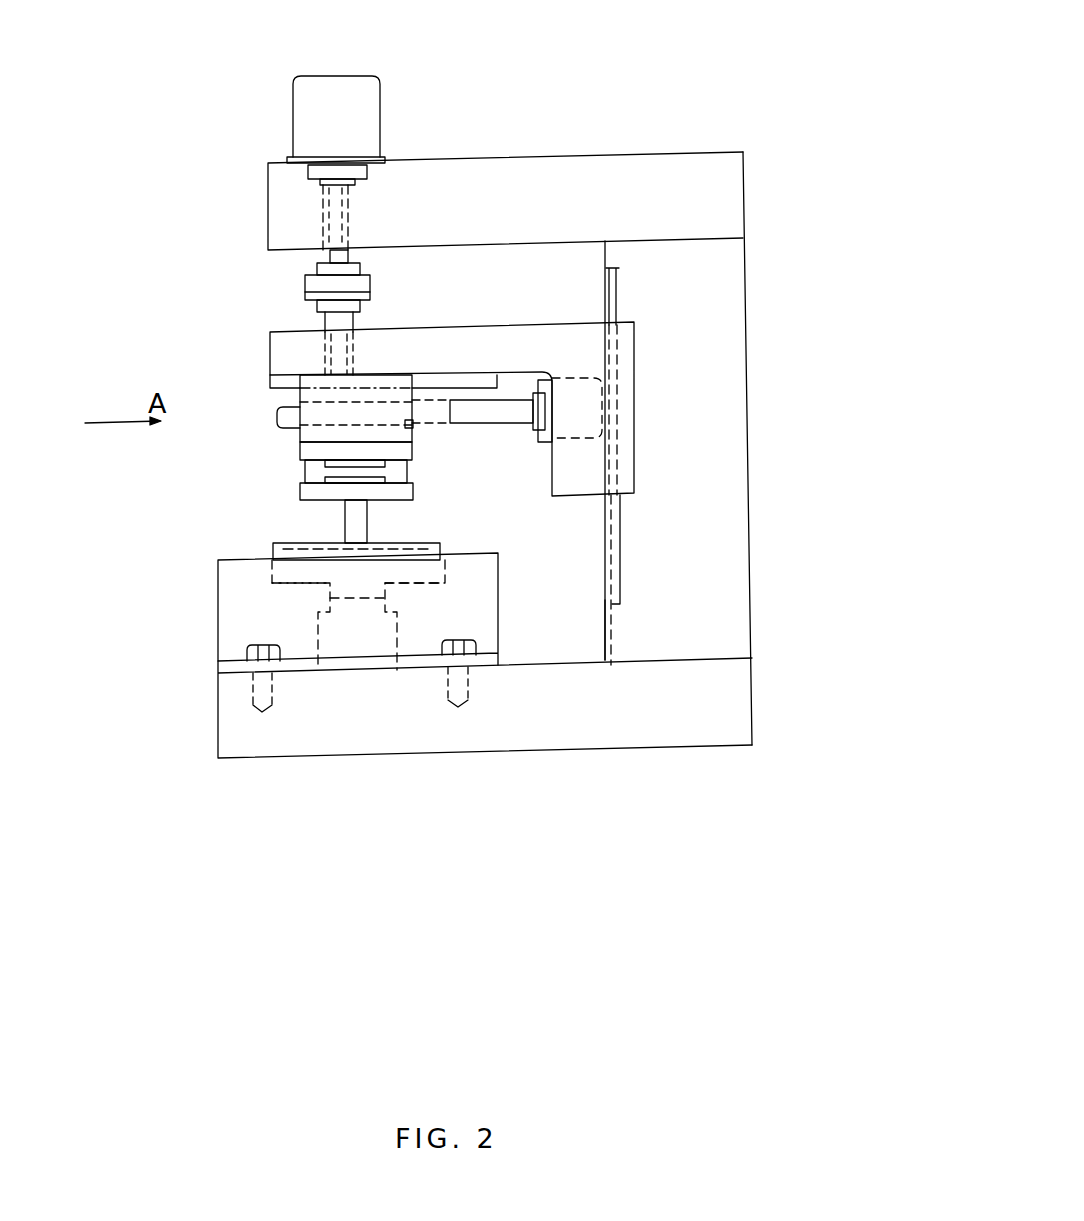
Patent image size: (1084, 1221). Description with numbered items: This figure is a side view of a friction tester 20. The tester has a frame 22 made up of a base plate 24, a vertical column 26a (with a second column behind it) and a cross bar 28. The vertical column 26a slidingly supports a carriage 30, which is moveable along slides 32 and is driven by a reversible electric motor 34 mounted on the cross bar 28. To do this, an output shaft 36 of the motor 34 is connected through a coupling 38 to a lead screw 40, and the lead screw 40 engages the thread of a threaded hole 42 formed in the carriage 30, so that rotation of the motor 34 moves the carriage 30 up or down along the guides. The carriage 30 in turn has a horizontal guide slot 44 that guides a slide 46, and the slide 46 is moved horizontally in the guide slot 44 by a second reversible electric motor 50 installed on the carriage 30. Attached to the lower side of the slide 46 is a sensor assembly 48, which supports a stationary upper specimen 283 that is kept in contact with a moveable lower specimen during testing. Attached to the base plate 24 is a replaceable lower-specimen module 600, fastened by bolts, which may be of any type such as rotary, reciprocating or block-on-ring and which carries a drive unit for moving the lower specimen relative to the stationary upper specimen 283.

The friction tester 20 is at (799, 421).
The frame 22 is at (752, 543).
The base plate 24 is at (412, 741).
The vertical column 26a is at (717, 614).
The cross bar 28 is at (657, 170).
The carriage 30 is at (633, 370).
The slide 32 is at (613, 297).
The reversible electric motor 34 is at (364, 100).
The output shaft 36 is at (307, 263).
The coupling 38 is at (305, 293).
The lead screw 40 is at (355, 322).
The threaded hole 42 is at (323, 380).
The horizontal guide slot 44 is at (478, 382).
The slide 46 is at (300, 440).
The sensor assembly 48 is at (298, 500).
The reversible electric motor 50 is at (540, 442).
The stationary upper specimen 283 is at (345, 515).
The replaceable lower-specimen module 600 is at (508, 637).